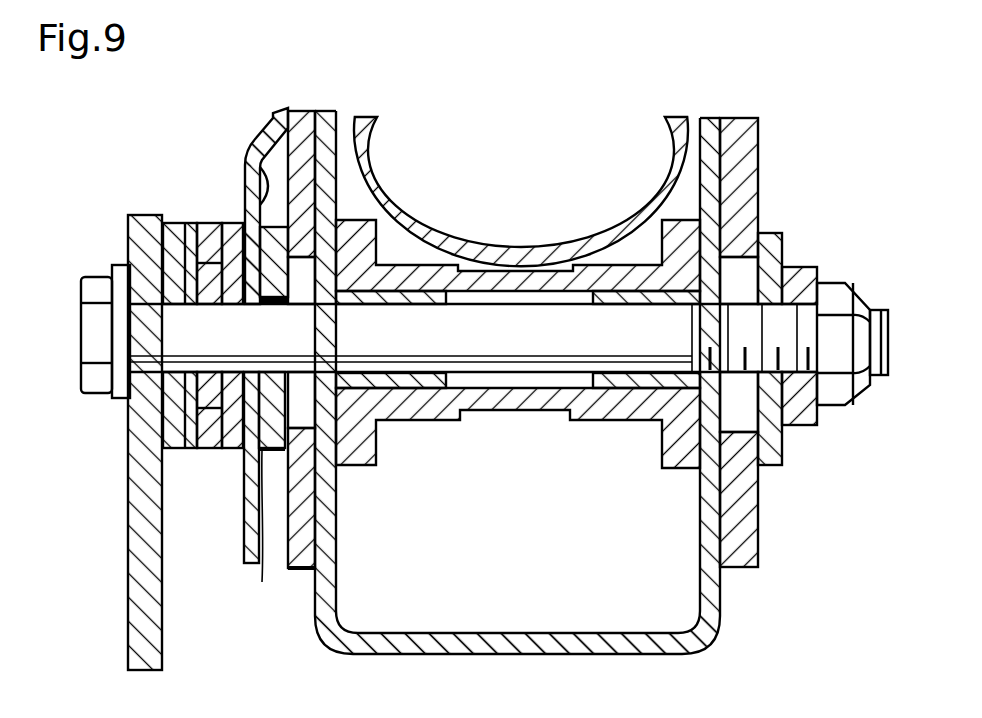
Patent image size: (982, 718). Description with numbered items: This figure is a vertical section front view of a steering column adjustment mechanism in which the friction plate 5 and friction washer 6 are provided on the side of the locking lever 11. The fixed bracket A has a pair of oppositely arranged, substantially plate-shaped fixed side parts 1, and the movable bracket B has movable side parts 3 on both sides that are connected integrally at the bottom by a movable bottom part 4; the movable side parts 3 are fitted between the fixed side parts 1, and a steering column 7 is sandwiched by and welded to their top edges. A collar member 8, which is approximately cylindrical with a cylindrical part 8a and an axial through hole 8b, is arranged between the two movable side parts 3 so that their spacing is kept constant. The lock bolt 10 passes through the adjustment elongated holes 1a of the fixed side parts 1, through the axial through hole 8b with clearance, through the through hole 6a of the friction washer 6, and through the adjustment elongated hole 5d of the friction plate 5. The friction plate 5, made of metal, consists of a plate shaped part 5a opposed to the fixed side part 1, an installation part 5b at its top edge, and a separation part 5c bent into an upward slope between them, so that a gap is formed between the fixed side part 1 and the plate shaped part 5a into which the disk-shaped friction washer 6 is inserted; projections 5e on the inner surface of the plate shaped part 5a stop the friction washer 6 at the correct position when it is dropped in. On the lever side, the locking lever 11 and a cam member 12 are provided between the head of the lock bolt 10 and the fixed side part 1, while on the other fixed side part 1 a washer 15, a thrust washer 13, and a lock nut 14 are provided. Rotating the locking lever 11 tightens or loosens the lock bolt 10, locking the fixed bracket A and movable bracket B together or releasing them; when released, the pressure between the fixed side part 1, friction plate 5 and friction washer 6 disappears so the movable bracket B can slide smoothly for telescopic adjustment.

The fixed side part 1 is at (552, 376).
The adjustment elongated hole 1a is at (738, 272).
The movable side part 3 is at (517, 382).
The movable bottom part 4 is at (525, 633).
The friction plate 5 is at (180, 324).
The plate shaped part 5a is at (245, 204).
The installation part 5b is at (272, 122).
The separation part 5c is at (250, 150).
The adjustment elongated hole 5d is at (252, 281).
The projection 5e is at (260, 170).
The friction washer 6 is at (293, 416).
The through hole 6a is at (273, 304).
The steering column 7 is at (420, 212).
The collar member 8 is at (518, 363).
The cylindrical part 8a is at (632, 421).
The axial through hole 8b is at (545, 384).
The lock bolt 10 is at (502, 357).
The locking lever 11 is at (165, 612).
The cam member 12 is at (213, 452).
The thrust washer 13 is at (818, 418).
The lock nut 14 is at (841, 283).
The washer 15 is at (783, 243).
The fixed bracket A is at (762, 147).
The movable bracket B is at (724, 600).